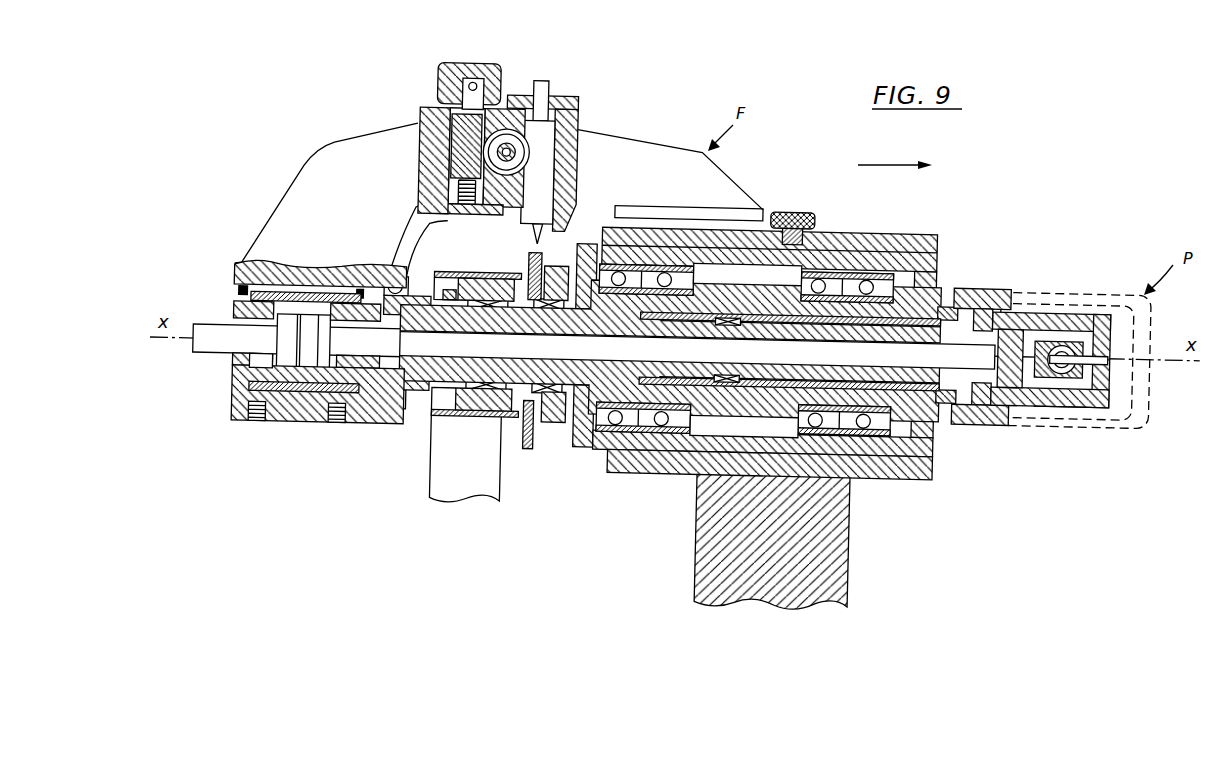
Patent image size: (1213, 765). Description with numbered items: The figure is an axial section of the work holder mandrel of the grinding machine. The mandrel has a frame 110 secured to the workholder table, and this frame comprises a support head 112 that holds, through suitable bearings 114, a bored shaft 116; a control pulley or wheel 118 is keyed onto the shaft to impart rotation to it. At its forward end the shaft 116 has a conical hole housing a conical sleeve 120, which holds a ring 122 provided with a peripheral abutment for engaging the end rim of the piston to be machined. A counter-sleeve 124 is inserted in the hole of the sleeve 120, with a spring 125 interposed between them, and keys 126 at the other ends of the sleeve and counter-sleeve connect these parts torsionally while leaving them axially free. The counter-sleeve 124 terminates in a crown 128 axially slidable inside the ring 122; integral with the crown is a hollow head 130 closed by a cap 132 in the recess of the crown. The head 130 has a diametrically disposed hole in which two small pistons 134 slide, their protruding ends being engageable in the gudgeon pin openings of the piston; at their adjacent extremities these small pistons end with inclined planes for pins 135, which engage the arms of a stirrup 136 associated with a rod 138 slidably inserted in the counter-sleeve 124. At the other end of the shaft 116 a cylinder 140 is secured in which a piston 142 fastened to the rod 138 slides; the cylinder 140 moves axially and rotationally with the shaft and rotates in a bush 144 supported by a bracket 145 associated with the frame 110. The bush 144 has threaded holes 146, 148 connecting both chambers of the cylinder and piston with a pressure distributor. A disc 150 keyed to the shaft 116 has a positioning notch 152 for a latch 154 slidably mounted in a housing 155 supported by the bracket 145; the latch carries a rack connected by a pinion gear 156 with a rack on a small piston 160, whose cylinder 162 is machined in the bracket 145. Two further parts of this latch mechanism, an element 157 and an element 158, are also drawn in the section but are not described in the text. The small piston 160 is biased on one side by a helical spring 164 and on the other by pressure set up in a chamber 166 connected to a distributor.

The frame 110 is at (843, 543).
The support head 112 is at (901, 233).
The bearings 114 is at (865, 283).
The bored shaft 116 is at (727, 290).
The control pulley or wheel 118 is at (450, 413).
The conical sleeve 120 is at (937, 262).
The ring 122 is at (1018, 310).
The counter-sleeve 124 is at (958, 310).
The spring 125 is at (940, 318).
The keys 126 is at (727, 387).
The crown 128 is at (990, 407).
The hollow head 130 is at (1080, 403).
The cap 132 is at (1107, 348).
The small pistons 134 is at (1073, 330).
The pins 135 is at (1057, 397).
The stirrup 136 is at (1048, 327).
The rod 138 is at (497, 343).
The cylinder 140 is at (330, 295).
The piston 142 is at (305, 280).
The bush 144 is at (293, 403).
The bracket 145 is at (650, 150).
The threaded hole 146 is at (257, 423).
The threaded hole 148 is at (335, 420).
The disc 150 is at (528, 450).
The positioning notch 152 is at (587, 250).
The latch 154 is at (532, 233).
The housing 155 is at (557, 110).
The pinion gear 156 is at (510, 138).
The plunger 157 is at (547, 143).
The cam 158 is at (506, 140).
The small piston 160 is at (470, 147).
The cylinder 162 is at (427, 177).
The helical spring 164 is at (460, 93).
The chamber 166 is at (448, 68).